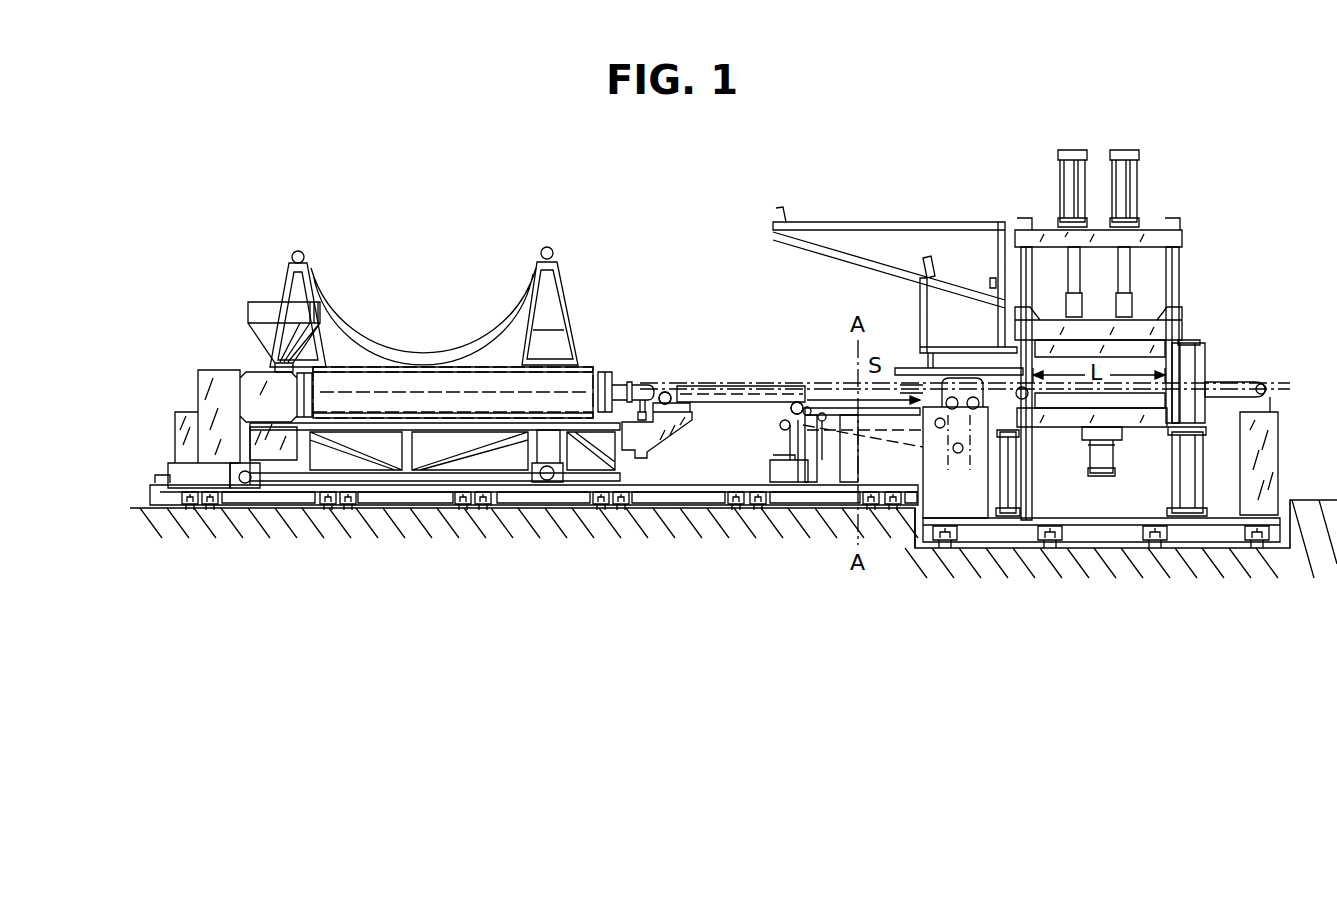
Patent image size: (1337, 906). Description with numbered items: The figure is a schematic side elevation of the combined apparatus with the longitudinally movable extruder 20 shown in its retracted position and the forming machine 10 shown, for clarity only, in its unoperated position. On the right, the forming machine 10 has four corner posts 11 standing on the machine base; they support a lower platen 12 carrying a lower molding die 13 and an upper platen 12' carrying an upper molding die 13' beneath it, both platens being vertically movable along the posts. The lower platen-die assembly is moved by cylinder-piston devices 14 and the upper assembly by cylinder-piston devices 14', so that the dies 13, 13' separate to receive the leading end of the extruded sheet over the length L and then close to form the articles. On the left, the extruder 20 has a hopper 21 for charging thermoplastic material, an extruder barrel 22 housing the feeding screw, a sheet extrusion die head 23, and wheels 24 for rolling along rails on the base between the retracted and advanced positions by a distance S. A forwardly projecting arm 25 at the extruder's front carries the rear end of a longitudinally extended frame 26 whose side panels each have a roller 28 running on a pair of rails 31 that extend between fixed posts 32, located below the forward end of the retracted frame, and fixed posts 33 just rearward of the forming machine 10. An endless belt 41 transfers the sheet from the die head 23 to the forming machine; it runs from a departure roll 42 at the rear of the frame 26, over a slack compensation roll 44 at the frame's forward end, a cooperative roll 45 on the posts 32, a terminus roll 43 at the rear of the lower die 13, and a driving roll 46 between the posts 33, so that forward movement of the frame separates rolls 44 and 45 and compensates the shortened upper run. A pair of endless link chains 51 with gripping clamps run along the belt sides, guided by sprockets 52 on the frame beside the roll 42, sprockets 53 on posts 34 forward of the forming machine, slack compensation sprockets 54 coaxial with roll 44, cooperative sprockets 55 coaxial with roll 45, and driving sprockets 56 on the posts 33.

The forming machine 10 is at (1014, 190).
The corner posts 11 is at (1180, 262).
The lower platen 12 is at (1100, 434).
The upper platen 12' is at (1100, 302).
The lower molding die 13 is at (1125, 412).
The upper molding die 13' is at (1119, 328).
The hydraulic or pneumatic cylinder-piston devices 14 is at (1101, 428).
The hydraulic or pneumatic cylinder-piston devices 14' is at (1099, 159).
The longitudinally movable extruder 20 is at (542, 228).
The hopper 21 is at (274, 303).
The extruder barrel 22 is at (430, 380).
The sheet extrusion die head 23 is at (640, 387).
The wheels 24 is at (250, 472).
The forwardly projecting arm 25 is at (655, 436).
The longitudinally extended frame 26 is at (738, 384).
The roller 28 is at (810, 405).
The rails 31 is at (823, 422).
The vertically standing posts 32 is at (787, 466).
The vertically standing posts 33 is at (930, 508).
The vertically standing posts 34 is at (1262, 440).
The endless belt 41 is at (845, 445).
The departure roll 42 is at (668, 393).
The terminus roll 43 is at (1018, 380).
The slack compensation roll 44 is at (800, 402).
The cooperative roll 45 is at (780, 426).
The driving roll 46 is at (960, 453).
The endless link chains 51 is at (1246, 383).
The sprockets 52 is at (668, 393).
The sprockets 53 is at (1263, 385).
The slack compensation sprockets 54 is at (800, 402).
The cooperative sprockets 55 is at (820, 422).
The driving sprockets 56 is at (940, 428).